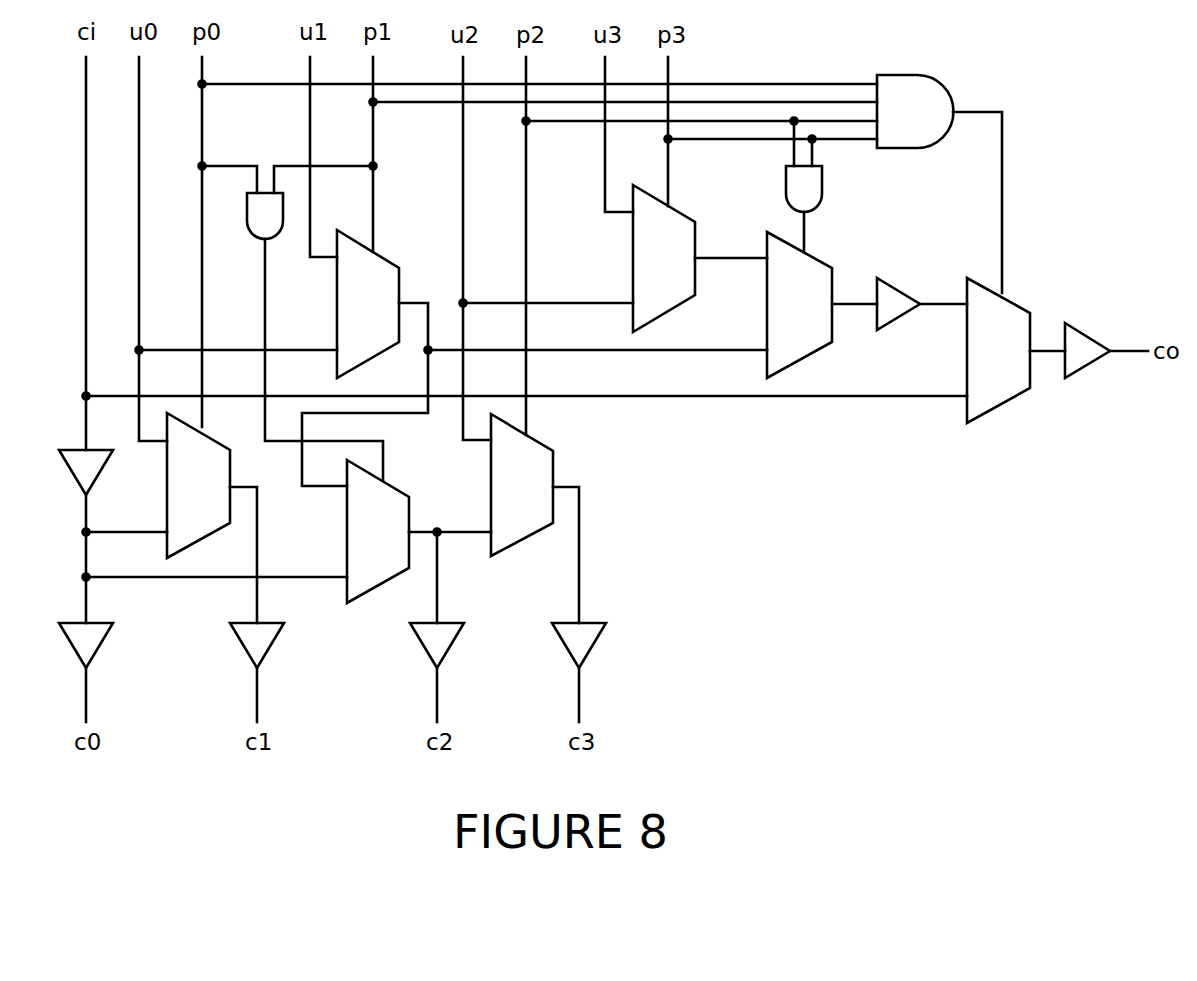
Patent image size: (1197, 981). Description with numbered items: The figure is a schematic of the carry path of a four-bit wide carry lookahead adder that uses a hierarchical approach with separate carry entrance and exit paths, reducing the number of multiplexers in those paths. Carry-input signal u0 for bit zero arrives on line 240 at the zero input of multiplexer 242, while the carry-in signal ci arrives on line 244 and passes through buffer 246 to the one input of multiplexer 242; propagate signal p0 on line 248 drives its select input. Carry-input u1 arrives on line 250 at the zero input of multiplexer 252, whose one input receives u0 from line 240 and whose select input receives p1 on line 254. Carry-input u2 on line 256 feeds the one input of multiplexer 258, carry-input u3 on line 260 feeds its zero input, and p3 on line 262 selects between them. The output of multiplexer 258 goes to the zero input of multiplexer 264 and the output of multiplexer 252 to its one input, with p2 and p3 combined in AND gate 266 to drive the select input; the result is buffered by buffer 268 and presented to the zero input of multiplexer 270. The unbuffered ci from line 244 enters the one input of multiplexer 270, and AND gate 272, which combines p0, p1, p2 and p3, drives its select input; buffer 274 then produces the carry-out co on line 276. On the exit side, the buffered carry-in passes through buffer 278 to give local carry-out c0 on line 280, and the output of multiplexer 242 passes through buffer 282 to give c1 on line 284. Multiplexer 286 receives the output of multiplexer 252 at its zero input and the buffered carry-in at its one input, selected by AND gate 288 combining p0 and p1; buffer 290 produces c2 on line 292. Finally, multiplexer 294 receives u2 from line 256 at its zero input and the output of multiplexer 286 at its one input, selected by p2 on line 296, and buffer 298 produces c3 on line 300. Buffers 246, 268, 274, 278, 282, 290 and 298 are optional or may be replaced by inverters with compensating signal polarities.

The line 240 is at (146, 75).
The multiplexer 242 is at (232, 420).
The line 244 is at (80, 60).
The buffer 246 is at (96, 441).
The line 248 is at (214, 71).
The line 250 is at (318, 75).
The multiplexer 252 is at (395, 258).
The line 254 is at (381, 75).
The line 256 is at (471, 76).
The multiplexer 258 is at (686, 210).
The line 260 is at (616, 76).
The line 262 is at (679, 75).
The multiplexer 264 is at (822, 254).
The AND gate 266 is at (833, 184).
The buffer 268 is at (896, 281).
The multiplexer 270 is at (1019, 295).
The AND gate 272 is at (936, 81).
The buffer 274 is at (1091, 329).
The line 276 is at (1135, 343).
The buffer 278 is at (113, 615).
The line 280 is at (96, 703).
The buffer 282 is at (284, 615).
The line 284 is at (268, 703).
The multiplexer 286 is at (396, 480).
The AND gate 288 is at (247, 241).
The buffer 290 is at (463, 615).
The line 292 is at (446, 703).
The multiplexer 294 is at (546, 435).
The line 296 is at (539, 76).
The buffer 298 is at (608, 615).
The line 300 is at (586, 703).